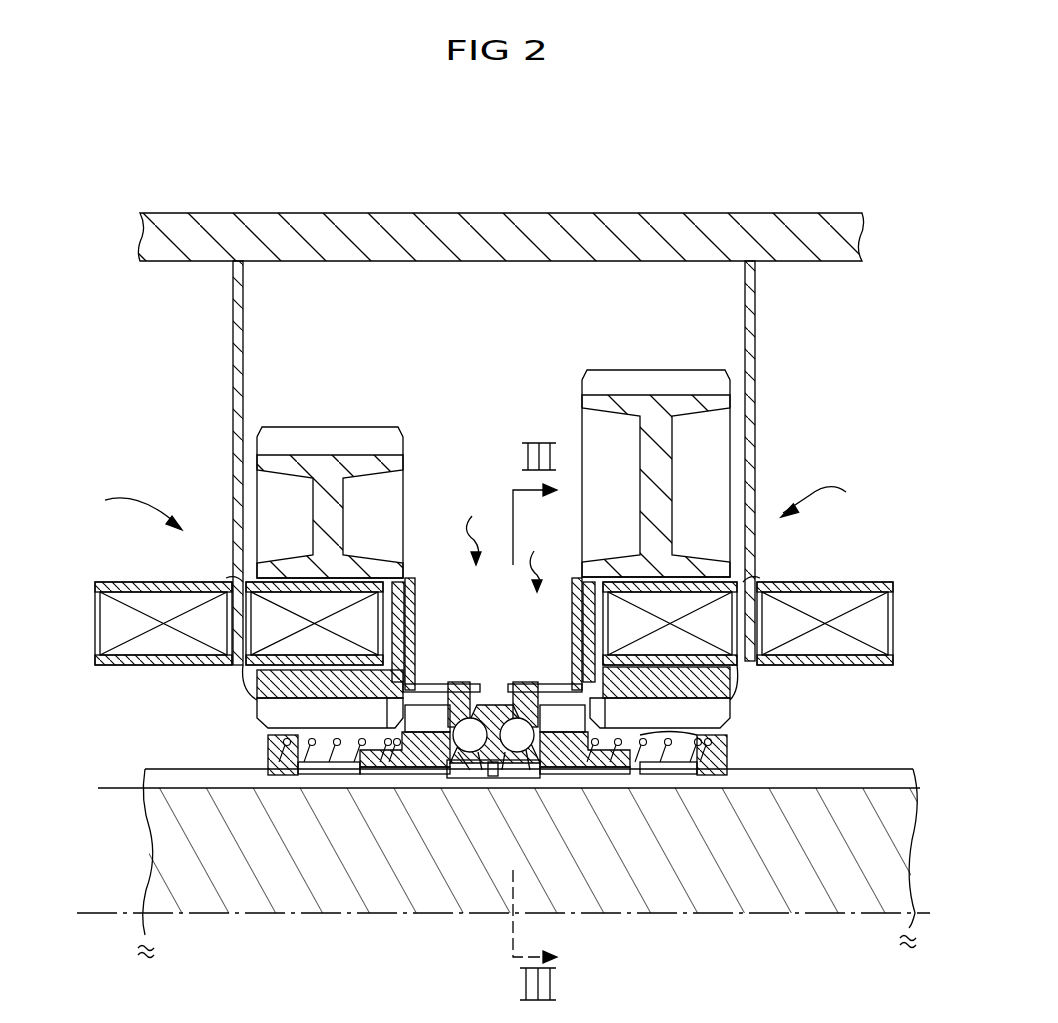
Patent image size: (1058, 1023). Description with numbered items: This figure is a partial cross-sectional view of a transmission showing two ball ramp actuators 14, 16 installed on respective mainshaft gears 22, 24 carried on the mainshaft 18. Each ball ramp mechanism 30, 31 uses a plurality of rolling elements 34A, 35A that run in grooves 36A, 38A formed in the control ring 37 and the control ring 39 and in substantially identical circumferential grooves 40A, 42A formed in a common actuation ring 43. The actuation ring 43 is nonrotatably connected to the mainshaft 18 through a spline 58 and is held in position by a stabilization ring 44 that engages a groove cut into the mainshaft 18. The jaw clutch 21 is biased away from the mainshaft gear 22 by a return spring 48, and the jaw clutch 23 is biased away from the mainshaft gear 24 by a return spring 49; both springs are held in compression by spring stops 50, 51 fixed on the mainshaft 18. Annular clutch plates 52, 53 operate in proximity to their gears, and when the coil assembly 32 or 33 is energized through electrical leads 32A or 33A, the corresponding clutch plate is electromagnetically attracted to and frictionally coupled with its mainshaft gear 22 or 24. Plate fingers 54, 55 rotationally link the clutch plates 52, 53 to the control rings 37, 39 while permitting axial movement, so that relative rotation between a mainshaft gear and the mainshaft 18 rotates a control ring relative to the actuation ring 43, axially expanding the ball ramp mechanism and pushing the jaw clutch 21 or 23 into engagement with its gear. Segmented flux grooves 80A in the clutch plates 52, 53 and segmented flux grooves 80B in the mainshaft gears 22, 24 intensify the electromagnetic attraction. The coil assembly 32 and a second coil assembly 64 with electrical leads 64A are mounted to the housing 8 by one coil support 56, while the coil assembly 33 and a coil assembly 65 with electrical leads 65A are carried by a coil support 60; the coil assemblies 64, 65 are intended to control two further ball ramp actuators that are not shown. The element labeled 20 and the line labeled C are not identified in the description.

The housing 8 is at (458, 220).
The ball ramp actuator 14 is at (129, 509).
The ball ramp actuator 16 is at (831, 496).
The mainshaft 18 is at (880, 800).
The track plate 20 is at (148, 772).
The jaw clutch 21 is at (400, 765).
The mainshaft gear 22 is at (345, 437).
The jaw clutch 23 is at (700, 735).
The mainshaft gear 24 is at (628, 380).
The ball ramp mechanism 30 is at (473, 526).
The ball ramp mechanism 31 is at (536, 557).
The coil assembly 32 is at (258, 665).
The electrical leads 32A is at (258, 710).
The coil assembly 33 is at (725, 648).
The electrical leads 33A is at (735, 690).
The rolling elements 34A is at (470, 752).
The rolling elements 35A is at (522, 748).
The grooves 36A is at (468, 742).
The control ring 37 is at (455, 700).
The grooves 38A is at (478, 756).
The control ring 39 is at (525, 700).
The circumferential grooves 40A is at (505, 758).
The circumferential grooves 42A is at (612, 762).
The actuation ring 43 is at (440, 712).
The stabilization ring 44 is at (500, 762).
The return spring 48 is at (312, 766).
The return spring 49 is at (675, 768).
The spring stop 50 is at (282, 776).
The spring stop 51 is at (725, 768).
The clutch plate 52 is at (410, 590).
The clutch plate 53 is at (575, 610).
The plate fingers 54 is at (410, 690).
The plate fingers 55 is at (592, 716).
The coil support 56 is at (236, 495).
The spline 58 is at (520, 745).
The coil support 60 is at (757, 458).
The coil assembly 64 is at (145, 635).
The electrical leads 64A is at (236, 583).
The coil assembly 65 is at (850, 648).
The electrical leads 65A is at (752, 582).
The segmented flux grooves 80A is at (412, 595).
The segmented flux grooves 80B is at (405, 635).
The center line C is at (98, 912).